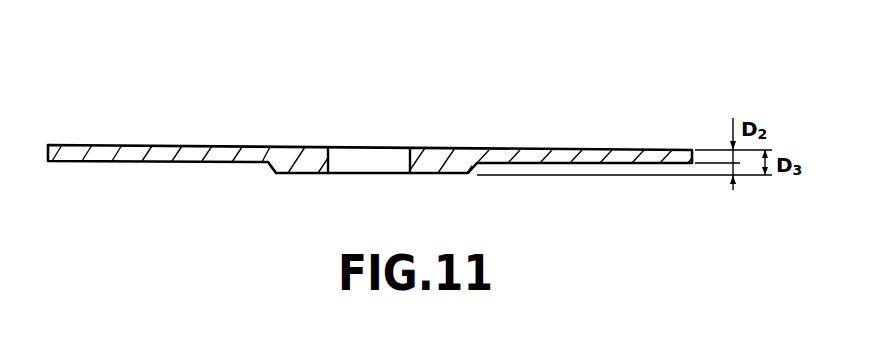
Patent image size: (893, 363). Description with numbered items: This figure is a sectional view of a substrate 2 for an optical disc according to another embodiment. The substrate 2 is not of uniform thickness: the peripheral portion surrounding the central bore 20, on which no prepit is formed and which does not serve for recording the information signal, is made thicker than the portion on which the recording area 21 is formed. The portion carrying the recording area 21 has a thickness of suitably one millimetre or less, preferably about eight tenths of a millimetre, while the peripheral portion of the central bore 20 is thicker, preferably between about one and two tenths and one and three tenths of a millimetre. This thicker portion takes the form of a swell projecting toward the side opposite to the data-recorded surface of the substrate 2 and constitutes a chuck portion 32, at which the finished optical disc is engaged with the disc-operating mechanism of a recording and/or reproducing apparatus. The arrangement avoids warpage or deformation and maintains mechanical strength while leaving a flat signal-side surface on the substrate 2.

The substrate 2 is at (80, 153).
The central bore 20 is at (410, 157).
The recording area 21 is at (612, 158).
The chuck portion 32 is at (297, 165).